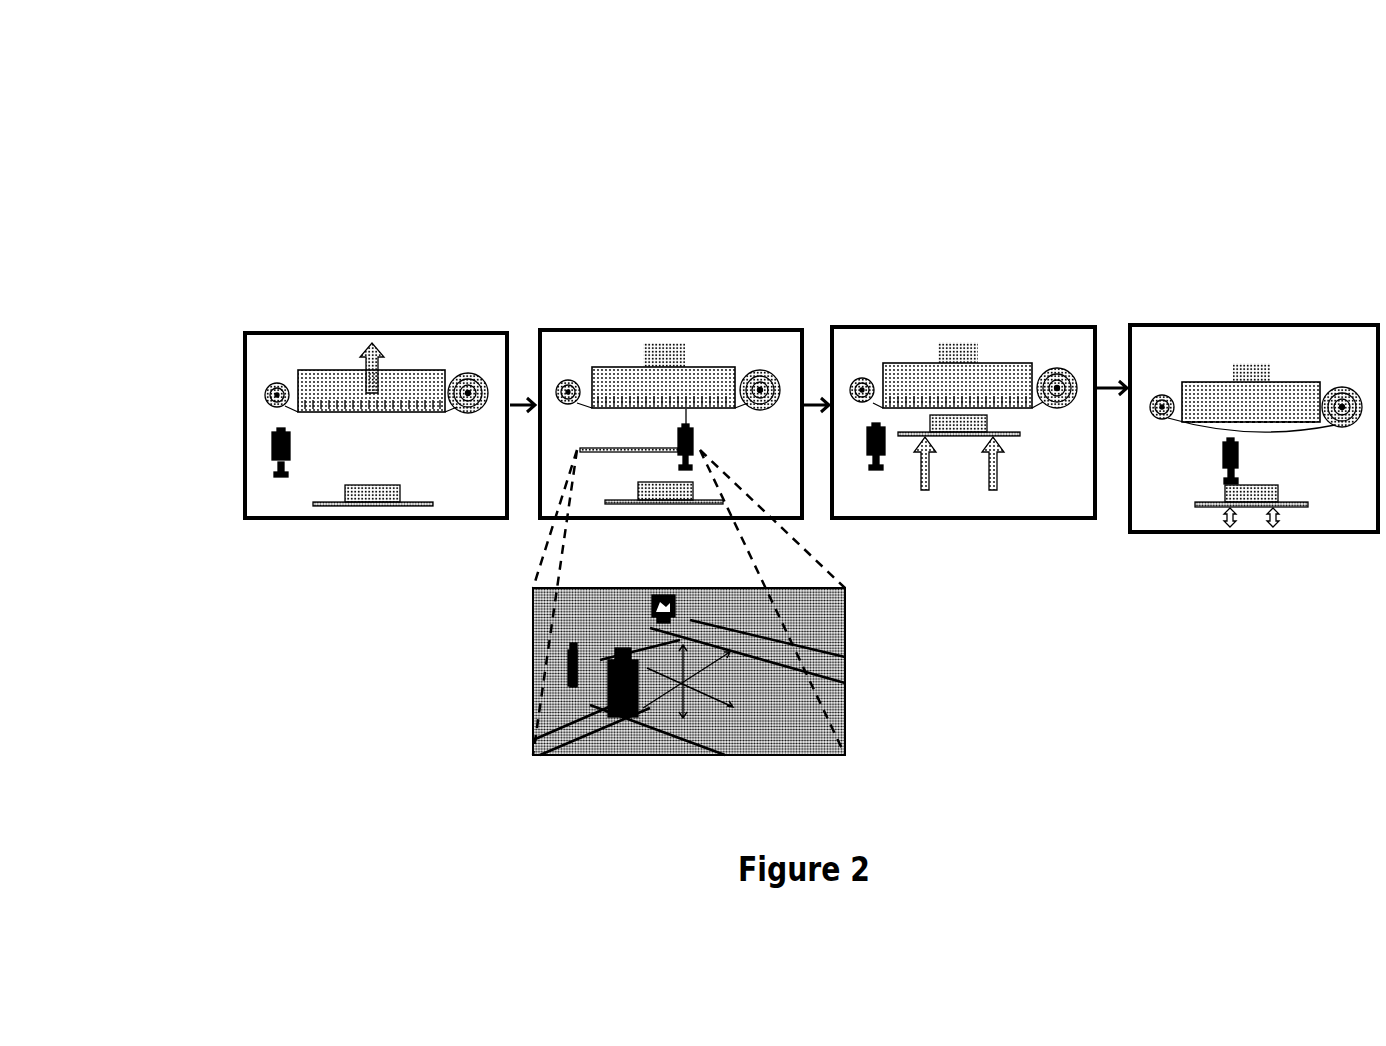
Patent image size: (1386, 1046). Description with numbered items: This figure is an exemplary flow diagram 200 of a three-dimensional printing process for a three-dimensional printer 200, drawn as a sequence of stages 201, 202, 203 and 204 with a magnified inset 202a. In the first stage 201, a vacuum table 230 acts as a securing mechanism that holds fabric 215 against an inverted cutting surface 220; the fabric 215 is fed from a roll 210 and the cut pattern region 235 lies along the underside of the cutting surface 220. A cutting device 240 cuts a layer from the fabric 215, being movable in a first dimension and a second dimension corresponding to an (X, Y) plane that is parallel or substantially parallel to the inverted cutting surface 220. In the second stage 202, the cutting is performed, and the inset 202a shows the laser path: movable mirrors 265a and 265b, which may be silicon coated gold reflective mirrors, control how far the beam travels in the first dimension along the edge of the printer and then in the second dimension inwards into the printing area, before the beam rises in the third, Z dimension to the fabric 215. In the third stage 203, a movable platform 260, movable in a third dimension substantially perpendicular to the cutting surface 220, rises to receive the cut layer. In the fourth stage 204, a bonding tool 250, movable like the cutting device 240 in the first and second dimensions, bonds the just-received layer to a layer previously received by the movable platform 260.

The flow diagram 200 is at (560, 187).
The first stage: web feed and print head positioning 201 is at (319, 385).
The second stage: camera inspection of printed pattern 202 is at (671, 443).
The magnified view of inspection region with coordinate axes 202a is at (694, 624).
The third stage: substrate raised toward print head 203 is at (963, 440).
The fourth stage: web pressed onto substrate 204 is at (1254, 453).
The supply roll 210 is at (277, 387).
The fabric 215 is at (293, 413).
The inverted cutting surface 220 is at (353, 400).
The vacuum table 230 is at (410, 367).
The nozzles / printed pattern 235 is at (420, 409).
The cutting device 240 is at (275, 427).
The bonding tool 250 is at (280, 465).
The movable platform 260 is at (313, 502).
The movable mirror 265a is at (700, 597).
The movable mirror 265b is at (570, 663).